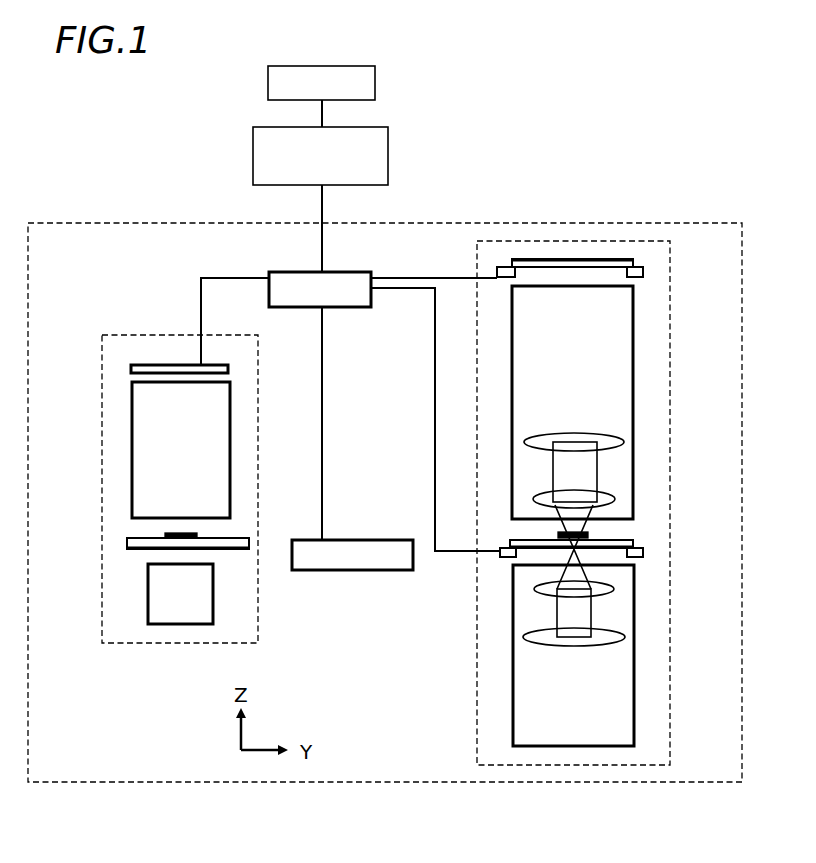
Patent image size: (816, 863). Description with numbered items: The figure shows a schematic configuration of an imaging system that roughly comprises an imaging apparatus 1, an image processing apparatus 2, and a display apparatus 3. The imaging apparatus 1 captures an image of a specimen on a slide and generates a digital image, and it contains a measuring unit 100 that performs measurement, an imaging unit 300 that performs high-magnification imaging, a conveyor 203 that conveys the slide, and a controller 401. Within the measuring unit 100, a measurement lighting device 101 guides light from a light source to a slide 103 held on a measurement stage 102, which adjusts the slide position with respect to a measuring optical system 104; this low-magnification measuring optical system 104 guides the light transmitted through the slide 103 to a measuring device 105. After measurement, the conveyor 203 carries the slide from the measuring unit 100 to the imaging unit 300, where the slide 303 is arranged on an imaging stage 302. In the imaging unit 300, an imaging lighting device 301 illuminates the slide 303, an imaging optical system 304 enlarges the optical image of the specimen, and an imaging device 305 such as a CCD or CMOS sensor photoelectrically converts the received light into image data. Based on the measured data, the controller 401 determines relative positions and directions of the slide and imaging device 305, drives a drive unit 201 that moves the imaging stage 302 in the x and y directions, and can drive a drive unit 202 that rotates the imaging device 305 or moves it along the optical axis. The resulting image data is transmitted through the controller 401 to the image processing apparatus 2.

The imaging apparatus 1 is at (103, 223).
The image processing apparatus 2 is at (389, 154).
The display apparatus 3 is at (377, 86).
The measuring unit 100 is at (147, 335).
The measurement lighting device 101 is at (148, 585).
The measurement stage 102 is at (127, 546).
The slide 103 is at (165, 536).
The measuring optical system 104 is at (132, 420).
The measuring device 105 is at (131, 368).
The drive unit 201 is at (500, 556).
The drive unit 202 is at (497, 272).
The conveyor 203 is at (335, 572).
The imaging unit 300 is at (600, 241).
The imaging lighting device 301 is at (630, 622).
The imaging stage 302 is at (640, 546).
The slide 303 is at (590, 537).
The imaging optical system 304 is at (625, 440).
The imaging device 305 is at (640, 266).
The controller 401 is at (360, 272).